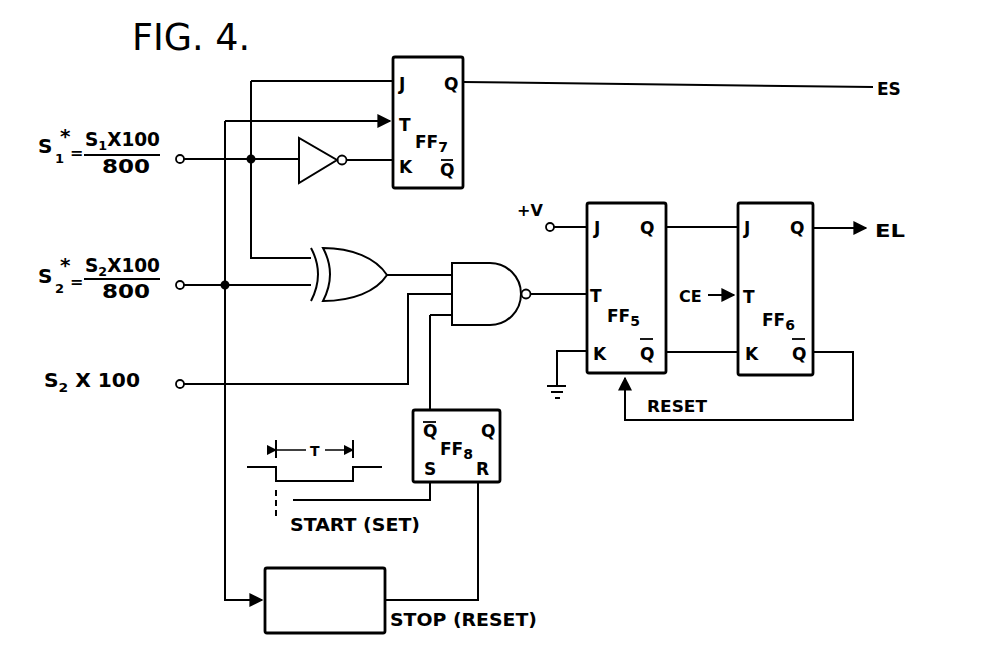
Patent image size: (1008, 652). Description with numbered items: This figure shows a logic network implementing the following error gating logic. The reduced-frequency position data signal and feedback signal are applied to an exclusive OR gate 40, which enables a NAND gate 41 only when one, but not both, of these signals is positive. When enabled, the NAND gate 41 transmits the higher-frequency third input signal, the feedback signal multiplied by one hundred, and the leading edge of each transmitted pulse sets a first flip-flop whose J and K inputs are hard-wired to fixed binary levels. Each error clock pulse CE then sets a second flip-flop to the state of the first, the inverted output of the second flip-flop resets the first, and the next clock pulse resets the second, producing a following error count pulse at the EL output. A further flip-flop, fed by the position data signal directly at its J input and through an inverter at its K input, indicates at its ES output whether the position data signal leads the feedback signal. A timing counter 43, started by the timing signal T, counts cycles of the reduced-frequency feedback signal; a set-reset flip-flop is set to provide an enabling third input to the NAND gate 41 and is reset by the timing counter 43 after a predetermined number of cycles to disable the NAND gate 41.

The exclusive OR gate 40 is at (348, 248).
The NAND gate 41 is at (466, 263).
The timing counter 43 is at (385, 583).